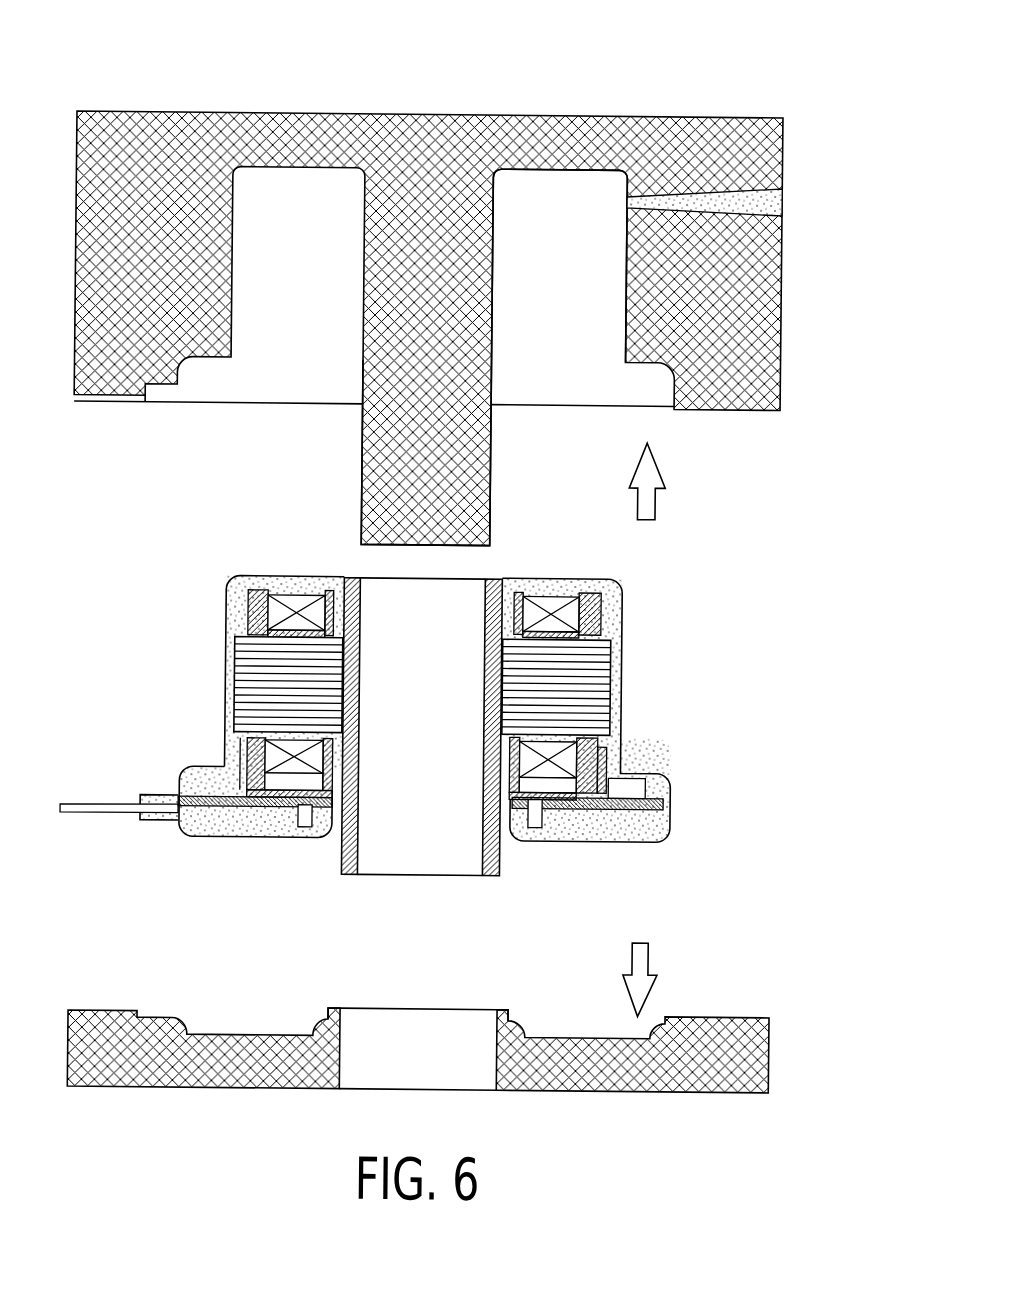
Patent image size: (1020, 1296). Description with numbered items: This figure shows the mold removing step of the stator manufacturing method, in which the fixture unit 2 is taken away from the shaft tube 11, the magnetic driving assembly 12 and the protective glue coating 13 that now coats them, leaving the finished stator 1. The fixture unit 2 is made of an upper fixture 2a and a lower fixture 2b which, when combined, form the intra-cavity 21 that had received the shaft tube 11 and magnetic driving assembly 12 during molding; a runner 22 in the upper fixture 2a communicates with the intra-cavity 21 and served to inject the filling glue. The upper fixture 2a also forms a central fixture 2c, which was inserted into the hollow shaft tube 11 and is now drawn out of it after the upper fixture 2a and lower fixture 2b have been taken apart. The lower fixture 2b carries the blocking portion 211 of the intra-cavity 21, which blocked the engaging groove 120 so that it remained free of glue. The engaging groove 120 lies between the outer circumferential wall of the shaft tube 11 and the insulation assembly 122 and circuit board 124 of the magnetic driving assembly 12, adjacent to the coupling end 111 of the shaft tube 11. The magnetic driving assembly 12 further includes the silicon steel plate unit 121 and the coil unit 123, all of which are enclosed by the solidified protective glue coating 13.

The stator 1 is at (457, 724).
The shaft tube 11 is at (400, 862).
The coupling end 111 is at (500, 856).
The magnetic driving assembly 12 is at (517, 669).
The engaging groove 120 is at (511, 788).
The silicon steel plate unit 121 is at (608, 652).
The insulation assembly 122 is at (600, 755).
The coil unit 123 is at (592, 598).
The circuit board 124 is at (480, 773).
The protective glue coating 13 is at (248, 604).
The fixture unit 2 is at (454, 274).
The upper fixture 2a is at (710, 116).
The lower fixture 2b is at (418, 1050).
The central fixture 2c is at (482, 473).
The intra-cavity 21 is at (556, 197).
The blocking portion 211 is at (509, 1008).
The runner 22 is at (771, 193).